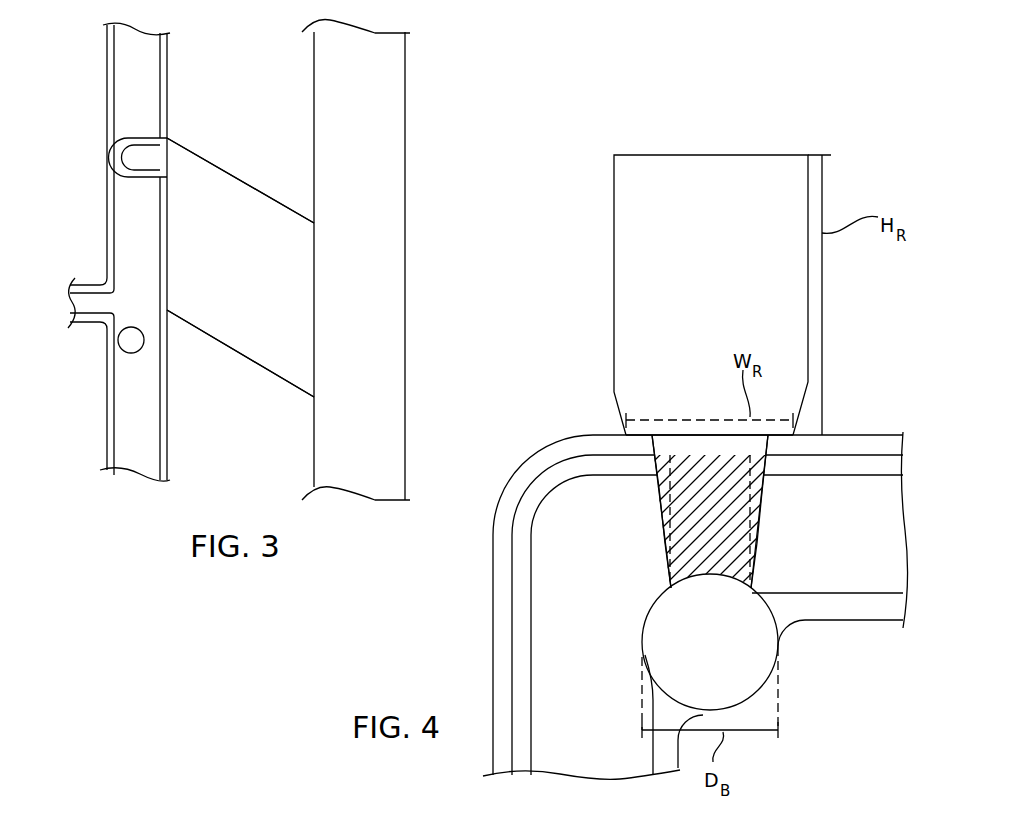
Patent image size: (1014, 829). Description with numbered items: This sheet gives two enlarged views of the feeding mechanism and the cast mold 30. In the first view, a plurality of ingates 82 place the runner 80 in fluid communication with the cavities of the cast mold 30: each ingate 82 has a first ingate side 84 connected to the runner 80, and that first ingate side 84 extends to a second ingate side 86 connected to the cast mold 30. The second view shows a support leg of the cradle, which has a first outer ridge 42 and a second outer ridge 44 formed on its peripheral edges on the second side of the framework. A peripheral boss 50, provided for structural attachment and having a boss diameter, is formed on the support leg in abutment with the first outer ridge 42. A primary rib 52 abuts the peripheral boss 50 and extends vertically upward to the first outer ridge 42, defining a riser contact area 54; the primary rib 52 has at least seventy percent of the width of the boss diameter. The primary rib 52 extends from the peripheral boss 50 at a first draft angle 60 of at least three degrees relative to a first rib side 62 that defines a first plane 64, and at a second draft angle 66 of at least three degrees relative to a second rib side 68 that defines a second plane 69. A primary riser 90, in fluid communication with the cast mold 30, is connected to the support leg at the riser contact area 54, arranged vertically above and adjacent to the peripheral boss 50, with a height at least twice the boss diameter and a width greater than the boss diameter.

In FIG. 3, the cast mold 30 is at (139, 101).
In FIG. 3, the runner 80 is at (355, 249).
In FIG. 3, the ingate 82 is at (232, 278).
In FIG. 3, the first ingate side 84 is at (314, 250).
In FIG. 3, the second ingate side 86 is at (168, 285).
In FIG. 4, the primary riser 90 is at (707, 301).
In FIG. 4, the first outer ridge 42 is at (843, 448).
In FIG. 4, the second outer ridge 44 is at (837, 610).
In FIG. 4, the peripheral boss 50 is at (700, 646).
In FIG. 4, the primary rib 52 is at (702, 527).
In FIG. 4, the riser contact area 54 is at (673, 435).
In FIG. 4, the first draft angle 60 is at (665, 543).
In FIG. 4, the first rib side 62 is at (659, 488).
In FIG. 4, the first plane 64 is at (669, 570).
In FIG. 4, the second draft angle 66 is at (760, 541).
In FIG. 4, the second rib side 68 is at (750, 563).
In FIG. 4, the second plane 69 is at (750, 492).